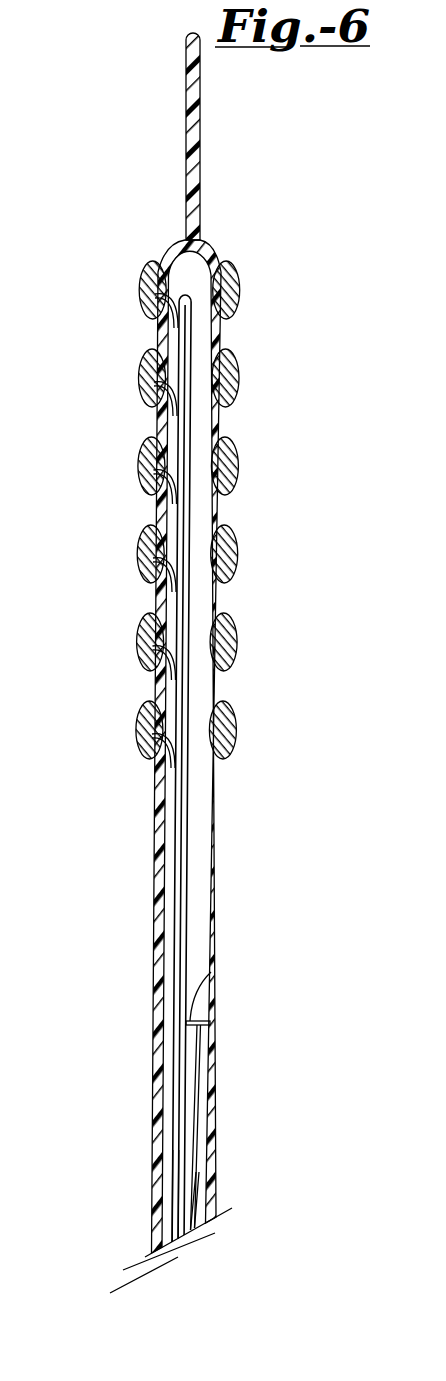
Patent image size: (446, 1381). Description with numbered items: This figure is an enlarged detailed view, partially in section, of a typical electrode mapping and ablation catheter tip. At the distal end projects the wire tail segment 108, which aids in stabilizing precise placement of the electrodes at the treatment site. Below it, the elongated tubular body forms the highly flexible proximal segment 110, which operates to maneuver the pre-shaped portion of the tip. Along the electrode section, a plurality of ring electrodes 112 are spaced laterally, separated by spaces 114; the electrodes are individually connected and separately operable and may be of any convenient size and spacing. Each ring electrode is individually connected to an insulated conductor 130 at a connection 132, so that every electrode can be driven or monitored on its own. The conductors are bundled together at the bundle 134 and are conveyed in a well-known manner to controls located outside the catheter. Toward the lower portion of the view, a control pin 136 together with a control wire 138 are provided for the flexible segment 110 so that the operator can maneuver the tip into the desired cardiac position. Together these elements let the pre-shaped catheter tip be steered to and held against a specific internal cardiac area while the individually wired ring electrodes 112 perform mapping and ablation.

The wire tail segment 108 is at (183, 113).
The flexible proximal segment 110 is at (217, 897).
The ring electrodes 112 is at (232, 723).
The spaces 114 is at (222, 503).
The insulated conductor 130 is at (160, 595).
The electrode connection 132 is at (153, 527).
The conductor bundle 134 is at (172, 1145).
The control pin 136 is at (216, 972).
The control wire 138 is at (200, 1172).